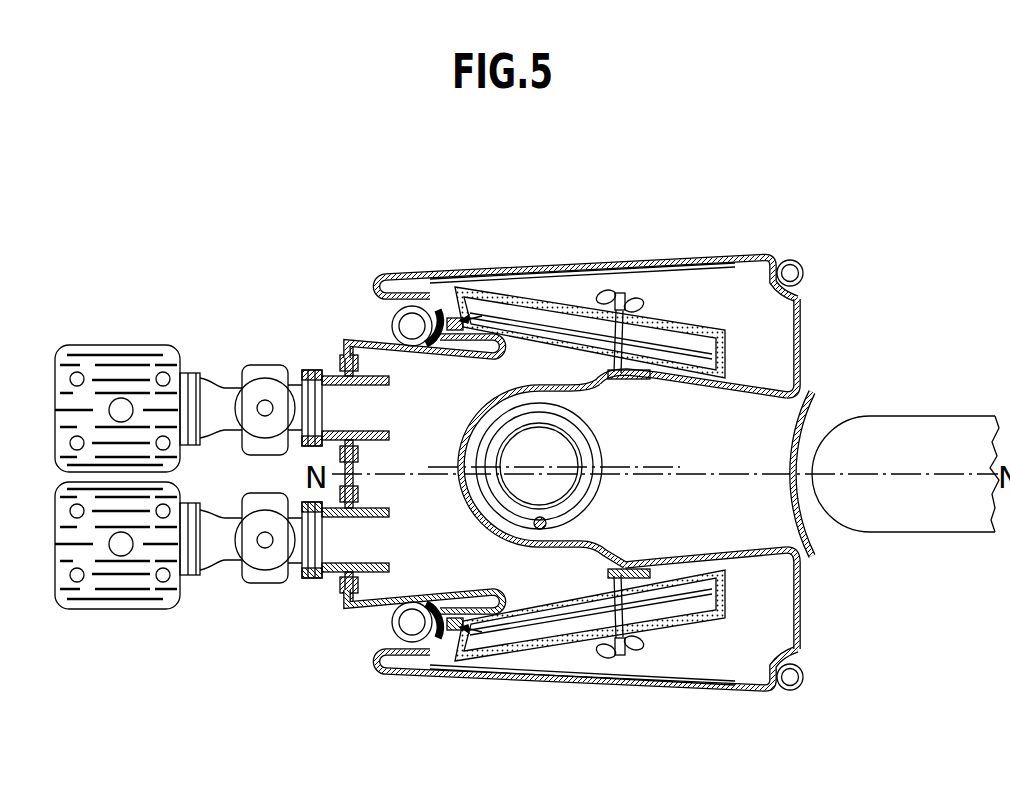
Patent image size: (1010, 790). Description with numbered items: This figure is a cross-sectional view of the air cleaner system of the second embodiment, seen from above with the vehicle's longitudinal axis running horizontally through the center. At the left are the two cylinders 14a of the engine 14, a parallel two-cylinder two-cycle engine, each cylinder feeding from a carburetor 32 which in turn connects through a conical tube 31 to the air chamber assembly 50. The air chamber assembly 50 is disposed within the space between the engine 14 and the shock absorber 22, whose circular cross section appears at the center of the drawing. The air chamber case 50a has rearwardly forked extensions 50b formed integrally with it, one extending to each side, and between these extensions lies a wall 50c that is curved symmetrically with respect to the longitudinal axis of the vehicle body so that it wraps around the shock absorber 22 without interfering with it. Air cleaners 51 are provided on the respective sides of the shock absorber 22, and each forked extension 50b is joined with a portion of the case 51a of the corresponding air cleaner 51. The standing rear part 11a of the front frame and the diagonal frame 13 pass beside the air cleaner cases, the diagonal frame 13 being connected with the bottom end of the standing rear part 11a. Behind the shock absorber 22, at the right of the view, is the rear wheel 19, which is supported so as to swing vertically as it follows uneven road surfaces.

The engine 14 is at (78, 612).
The cylinder 14a is at (120, 345).
The carburetor 32 is at (263, 365).
The conical tube 31 is at (330, 370).
The air chamber assembly 50 is at (360, 607).
The air chamber case 50a is at (362, 340).
The rearwardly forked extension 50b is at (600, 381).
The wall 50c is at (465, 445).
The standing rear part 11a is at (407, 312).
The air cleaner 51 is at (620, 262).
The case 51a is at (800, 340).
The diagonal frame 13 is at (802, 265).
The shock absorber 22 is at (598, 457).
The rear wheel 19 is at (947, 524).